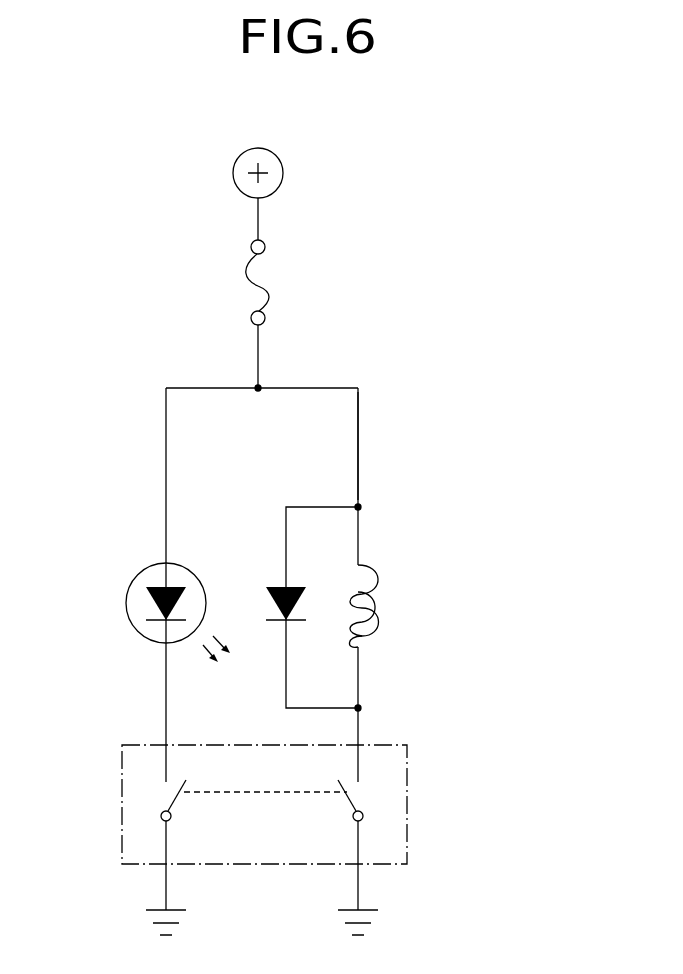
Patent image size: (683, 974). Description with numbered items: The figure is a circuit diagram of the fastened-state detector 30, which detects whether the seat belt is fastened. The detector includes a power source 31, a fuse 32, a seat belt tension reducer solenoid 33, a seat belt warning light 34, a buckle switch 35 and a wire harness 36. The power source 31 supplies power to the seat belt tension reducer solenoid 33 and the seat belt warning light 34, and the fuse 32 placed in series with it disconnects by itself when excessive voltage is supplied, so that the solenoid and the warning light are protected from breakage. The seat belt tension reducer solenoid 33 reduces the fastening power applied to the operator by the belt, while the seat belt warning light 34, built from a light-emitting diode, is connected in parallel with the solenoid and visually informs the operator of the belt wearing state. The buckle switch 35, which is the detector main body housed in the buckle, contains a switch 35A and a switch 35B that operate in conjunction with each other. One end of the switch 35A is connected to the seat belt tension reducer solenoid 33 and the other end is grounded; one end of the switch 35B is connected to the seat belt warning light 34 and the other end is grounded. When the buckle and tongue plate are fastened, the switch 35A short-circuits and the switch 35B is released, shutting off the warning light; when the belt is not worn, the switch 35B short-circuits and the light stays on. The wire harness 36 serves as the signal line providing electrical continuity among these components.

The fastened-state detector 30 is at (424, 252).
The power source 31 is at (283, 172).
The fuse 32 is at (268, 284).
The seat belt tension reducer solenoid 33 is at (404, 575).
The seat belt warning light 34 is at (127, 596).
The buckle switch 35 is at (407, 800).
The switch 35A is at (348, 805).
The switch 35B is at (174, 798).
The wire harness 36 is at (358, 428).